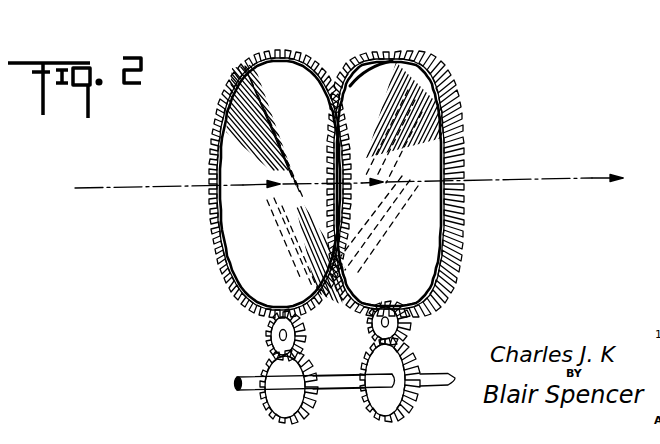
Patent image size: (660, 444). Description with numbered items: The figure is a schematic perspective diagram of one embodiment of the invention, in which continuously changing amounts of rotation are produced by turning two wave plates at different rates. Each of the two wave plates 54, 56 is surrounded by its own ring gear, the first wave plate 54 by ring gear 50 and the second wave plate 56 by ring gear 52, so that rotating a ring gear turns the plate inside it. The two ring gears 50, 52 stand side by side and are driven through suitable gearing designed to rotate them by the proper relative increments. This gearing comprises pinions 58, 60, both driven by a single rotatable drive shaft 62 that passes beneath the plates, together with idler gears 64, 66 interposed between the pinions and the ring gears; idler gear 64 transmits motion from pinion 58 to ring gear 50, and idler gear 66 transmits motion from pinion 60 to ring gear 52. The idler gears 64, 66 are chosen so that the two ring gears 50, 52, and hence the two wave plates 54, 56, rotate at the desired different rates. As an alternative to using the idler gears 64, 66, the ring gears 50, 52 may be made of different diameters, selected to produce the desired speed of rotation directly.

The ring gear 50 is at (220, 247).
The ring gear 52 is at (463, 223).
The wave plate 54 is at (243, 93).
The wave plate 56 is at (388, 90).
The pinion 58 is at (272, 392).
The pinion 60 is at (421, 401).
The rotatable drive shaft 62 is at (247, 382).
The idler gear 64 is at (269, 321).
The idler gear 66 is at (403, 322).